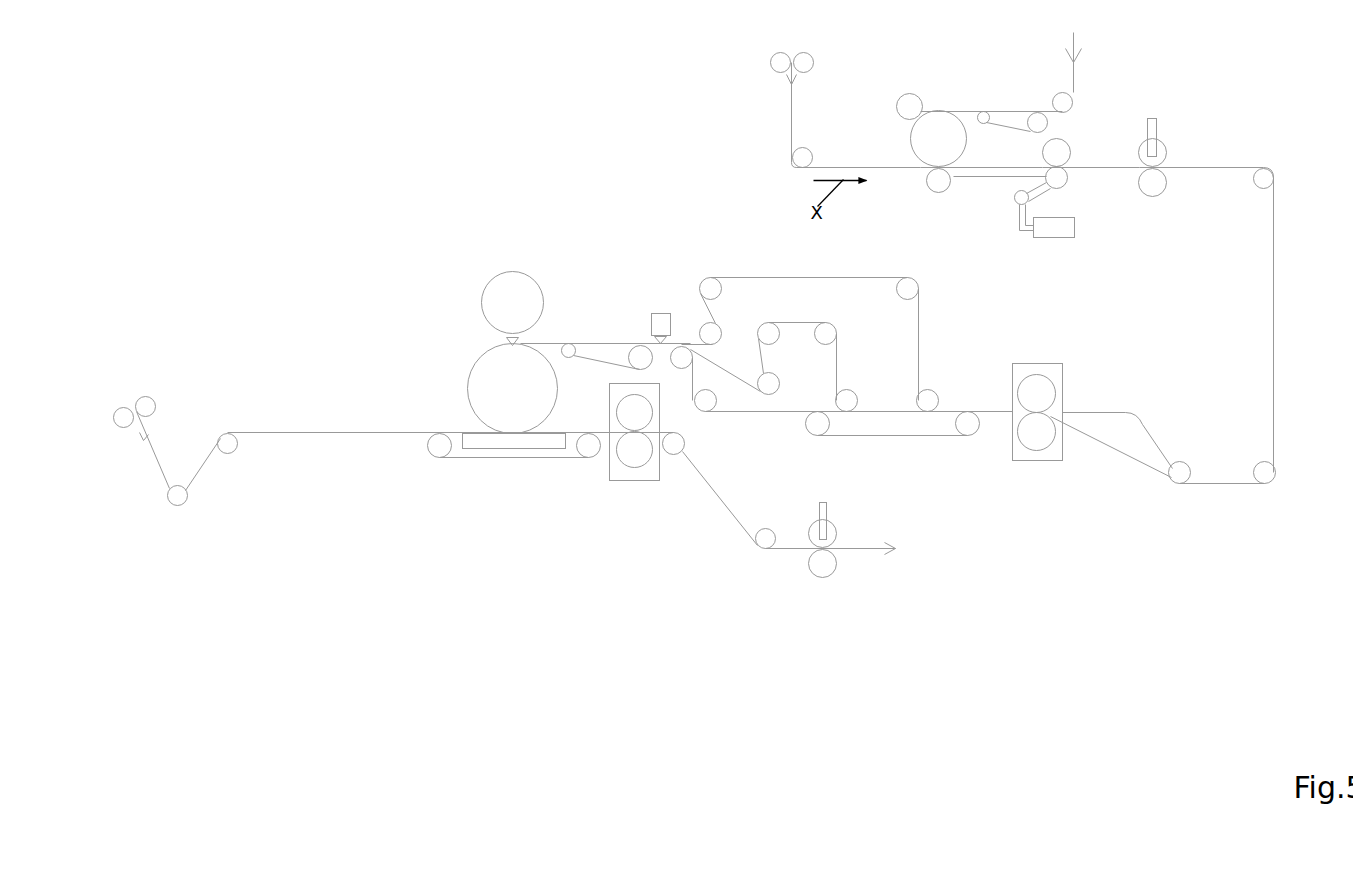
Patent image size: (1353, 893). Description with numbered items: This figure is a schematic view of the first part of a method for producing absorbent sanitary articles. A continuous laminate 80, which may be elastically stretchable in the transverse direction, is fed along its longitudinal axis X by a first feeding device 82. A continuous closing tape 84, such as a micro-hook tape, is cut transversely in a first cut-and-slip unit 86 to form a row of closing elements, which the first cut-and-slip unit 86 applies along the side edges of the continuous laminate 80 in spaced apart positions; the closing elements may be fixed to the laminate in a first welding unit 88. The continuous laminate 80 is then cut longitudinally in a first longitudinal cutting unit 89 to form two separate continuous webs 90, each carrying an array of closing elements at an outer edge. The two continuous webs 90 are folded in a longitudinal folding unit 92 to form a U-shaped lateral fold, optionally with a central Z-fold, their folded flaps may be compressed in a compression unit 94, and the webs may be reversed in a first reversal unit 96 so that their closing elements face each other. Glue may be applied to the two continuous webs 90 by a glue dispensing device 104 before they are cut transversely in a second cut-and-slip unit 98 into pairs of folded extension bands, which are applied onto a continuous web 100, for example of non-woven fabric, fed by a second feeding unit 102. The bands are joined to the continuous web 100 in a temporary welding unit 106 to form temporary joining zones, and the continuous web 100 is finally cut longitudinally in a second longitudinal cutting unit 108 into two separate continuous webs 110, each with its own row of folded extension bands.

The continuous laminate 80 is at (791, 128).
The first feeding device 82 is at (779, 62).
The continuous closing tape 84 is at (1070, 44).
The first cut-and-slip unit 86 is at (918, 90).
The first welding unit 88 is at (1076, 134).
The first longitudinal cutting unit 89 is at (1157, 106).
The continuous webs 90 is at (1217, 166).
The longitudinal folding unit 92 is at (1147, 403).
The compression unit 94 is at (1050, 349).
The first reversal unit 96 is at (929, 277).
The second cut-and-slip unit 98 is at (470, 317).
The continuous web 100 is at (151, 450).
The second feeding unit 102 is at (174, 387).
The glue dispensing device 104 is at (658, 320).
The temporary welding unit 106 is at (597, 478).
The second longitudinal cutting unit 108 is at (838, 509).
The continuous webs 110 is at (863, 547).